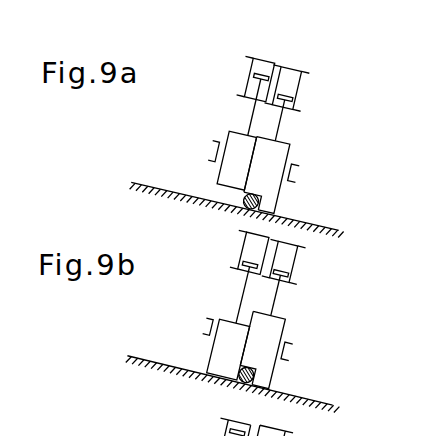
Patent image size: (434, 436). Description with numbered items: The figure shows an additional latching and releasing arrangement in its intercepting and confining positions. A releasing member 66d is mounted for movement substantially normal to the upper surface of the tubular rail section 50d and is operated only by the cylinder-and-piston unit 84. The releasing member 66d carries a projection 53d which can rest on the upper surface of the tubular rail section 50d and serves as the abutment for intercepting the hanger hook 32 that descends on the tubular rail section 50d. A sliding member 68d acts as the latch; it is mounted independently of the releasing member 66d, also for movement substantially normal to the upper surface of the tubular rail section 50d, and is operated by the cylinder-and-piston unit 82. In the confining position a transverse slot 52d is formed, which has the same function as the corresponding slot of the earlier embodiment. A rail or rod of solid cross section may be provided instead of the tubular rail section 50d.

In FIG. 9A, the cylinder-and-piston unit 82 is at (262, 60).
In FIG. 9A, the cylinder-and-piston unit 84 is at (294, 68).
In FIG. 9A, the sliding member 68d is at (233, 134).
In FIG. 9A, the releasing member 66d is at (288, 145).
In FIG. 9A, the tubular rail section 50d is at (150, 186).
In FIG. 9A, the hanger hook 32 is at (245, 198).
In FIG. 9A, the projection 53d is at (278, 206).
In FIG. 9B, the transverse slot 52d is at (252, 365).